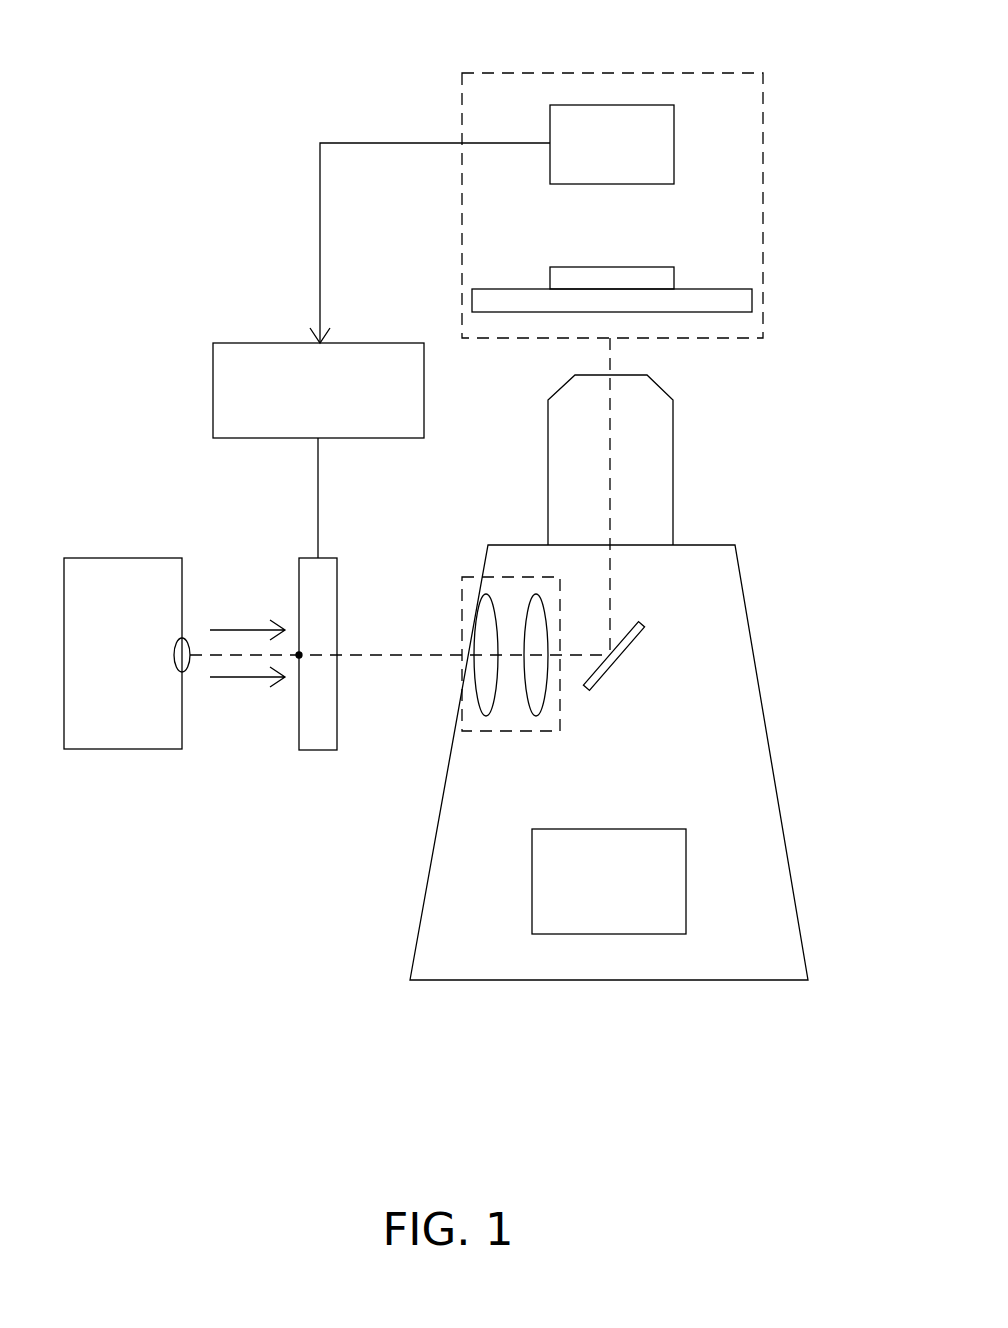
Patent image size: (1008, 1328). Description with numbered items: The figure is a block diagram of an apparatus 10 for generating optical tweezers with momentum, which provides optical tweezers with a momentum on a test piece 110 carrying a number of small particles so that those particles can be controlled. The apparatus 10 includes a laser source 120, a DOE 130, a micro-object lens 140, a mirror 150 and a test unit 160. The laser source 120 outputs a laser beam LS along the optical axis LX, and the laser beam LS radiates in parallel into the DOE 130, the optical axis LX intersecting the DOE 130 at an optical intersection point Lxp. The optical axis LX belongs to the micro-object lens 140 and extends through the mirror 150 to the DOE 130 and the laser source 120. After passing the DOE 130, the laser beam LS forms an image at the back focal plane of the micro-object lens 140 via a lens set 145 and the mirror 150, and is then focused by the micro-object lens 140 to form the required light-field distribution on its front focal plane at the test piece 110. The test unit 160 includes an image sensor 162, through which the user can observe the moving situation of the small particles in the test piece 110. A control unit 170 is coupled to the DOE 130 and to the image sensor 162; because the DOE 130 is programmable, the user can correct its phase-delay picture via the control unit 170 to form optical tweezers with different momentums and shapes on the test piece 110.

The apparatus for generating optical tweezers with momentum 10 is at (68, 58).
The test piece 110 is at (674, 277).
The laser source 120 is at (121, 749).
The DOE 130 is at (318, 750).
The micro-object lens 140 is at (673, 472).
The lens set 145 is at (505, 731).
The mirror 150 is at (633, 645).
The test unit 160 is at (763, 205).
The image sensor 162 is at (610, 105).
The control unit 170 is at (213, 386).
The laser beam LS is at (400, 666).
The optical intersection point Lxp is at (299, 655).
The optical axis LX is at (610, 572).